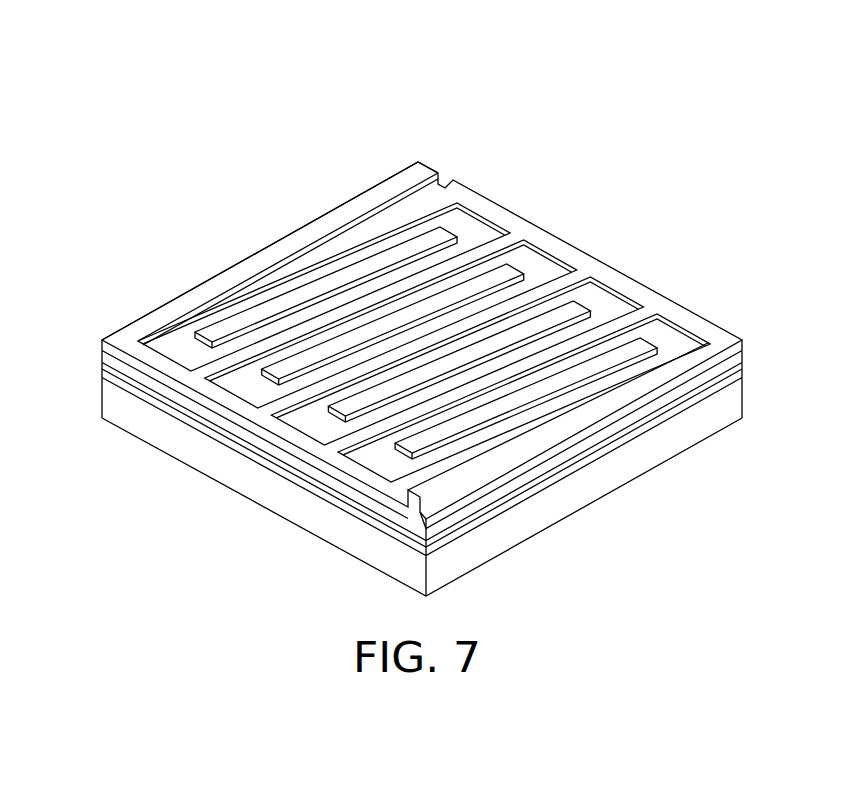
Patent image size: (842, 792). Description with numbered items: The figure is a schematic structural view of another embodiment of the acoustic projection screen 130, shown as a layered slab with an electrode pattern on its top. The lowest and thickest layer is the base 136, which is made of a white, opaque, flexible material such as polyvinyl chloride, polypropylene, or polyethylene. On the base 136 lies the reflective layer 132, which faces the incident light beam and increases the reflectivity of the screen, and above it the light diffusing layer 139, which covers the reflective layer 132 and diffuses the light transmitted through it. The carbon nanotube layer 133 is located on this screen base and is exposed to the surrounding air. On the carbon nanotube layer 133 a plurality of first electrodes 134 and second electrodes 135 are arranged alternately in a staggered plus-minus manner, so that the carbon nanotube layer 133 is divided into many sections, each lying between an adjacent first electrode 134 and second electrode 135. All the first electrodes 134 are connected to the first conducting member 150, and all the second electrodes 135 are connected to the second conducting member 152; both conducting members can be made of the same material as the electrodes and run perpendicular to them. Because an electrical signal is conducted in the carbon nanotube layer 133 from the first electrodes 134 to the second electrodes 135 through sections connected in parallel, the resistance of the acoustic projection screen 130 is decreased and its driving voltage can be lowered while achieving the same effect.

The acoustic projection screen 130 is at (337, 68).
The reflective layer 132 is at (104, 373).
The carbon nanotube layer 133 is at (104, 354).
The first electrode 134 is at (263, 262).
The second electrode 135 is at (695, 357).
The base 136 is at (107, 404).
The light diffusing layer 139 is at (480, 515).
The first conducting member 150 is at (230, 402).
The second conducting member 152 is at (548, 242).